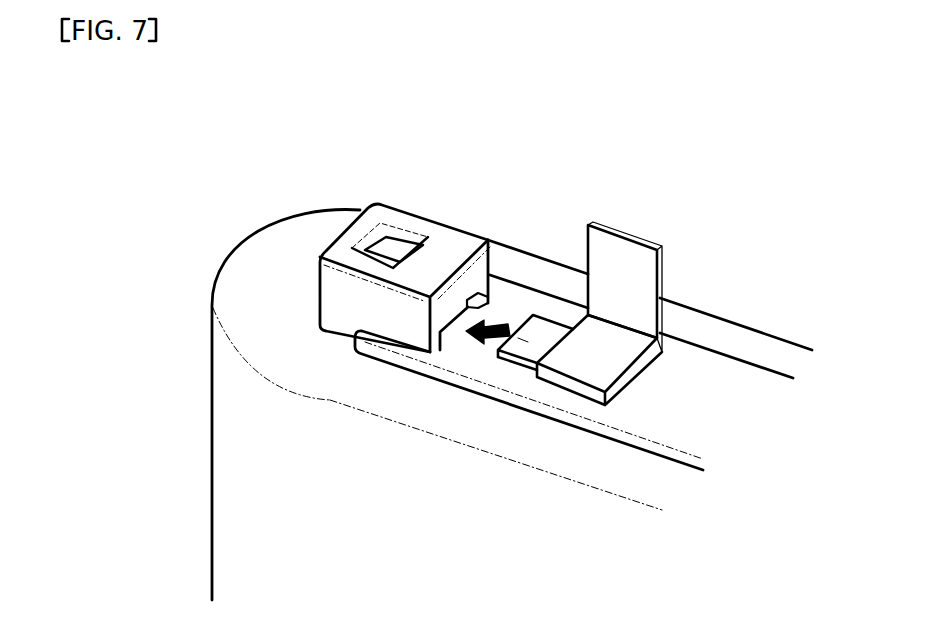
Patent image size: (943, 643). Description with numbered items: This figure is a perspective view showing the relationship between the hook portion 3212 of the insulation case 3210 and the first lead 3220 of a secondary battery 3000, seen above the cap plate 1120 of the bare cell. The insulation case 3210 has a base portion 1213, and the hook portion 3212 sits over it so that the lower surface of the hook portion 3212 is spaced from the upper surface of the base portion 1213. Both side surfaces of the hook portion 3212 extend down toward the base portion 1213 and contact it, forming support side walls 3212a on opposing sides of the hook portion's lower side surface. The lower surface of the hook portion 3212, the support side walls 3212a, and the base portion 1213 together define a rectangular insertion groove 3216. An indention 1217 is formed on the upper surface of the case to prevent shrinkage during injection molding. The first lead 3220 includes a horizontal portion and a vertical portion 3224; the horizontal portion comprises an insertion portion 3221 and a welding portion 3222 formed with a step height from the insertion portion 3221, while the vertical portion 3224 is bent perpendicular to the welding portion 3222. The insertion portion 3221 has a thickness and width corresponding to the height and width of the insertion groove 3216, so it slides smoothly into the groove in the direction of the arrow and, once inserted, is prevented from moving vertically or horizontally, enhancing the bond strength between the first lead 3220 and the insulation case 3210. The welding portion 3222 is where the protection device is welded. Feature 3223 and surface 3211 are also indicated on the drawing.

The cap plate 1120 is at (250, 288).
The base portion 1213 is at (643, 443).
The indention 1217 is at (393, 236).
The secondary battery 3000 is at (773, 139).
The insulation case 3210 is at (354, 236).
The housing top surface 3211 is at (348, 219).
The hook portion 3212 is at (483, 267).
The support side walls 3212a is at (433, 351).
The insertion groove 3216 is at (455, 333).
The first lead 3220 is at (700, 234).
The insertion portion 3221 is at (522, 356).
The welding portion 3222 is at (605, 352).
The slot 3223 is at (522, 345).
The vertical portion 3224 is at (607, 260).